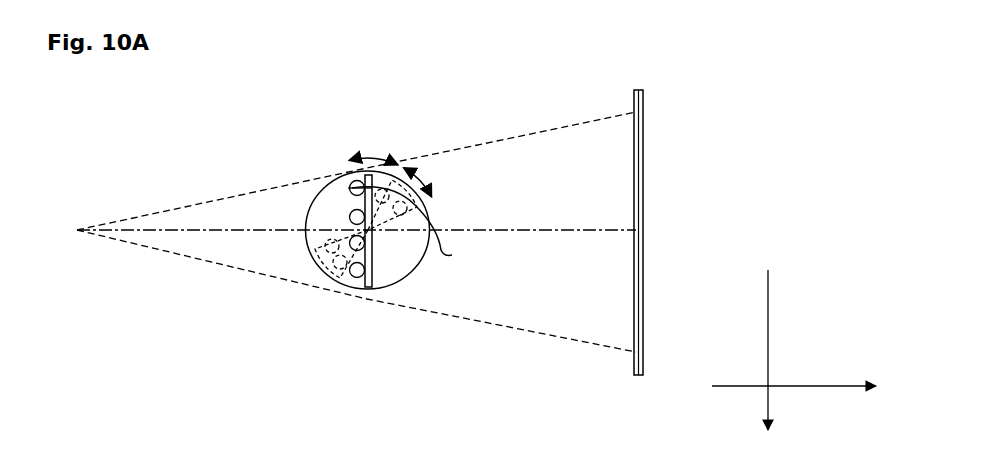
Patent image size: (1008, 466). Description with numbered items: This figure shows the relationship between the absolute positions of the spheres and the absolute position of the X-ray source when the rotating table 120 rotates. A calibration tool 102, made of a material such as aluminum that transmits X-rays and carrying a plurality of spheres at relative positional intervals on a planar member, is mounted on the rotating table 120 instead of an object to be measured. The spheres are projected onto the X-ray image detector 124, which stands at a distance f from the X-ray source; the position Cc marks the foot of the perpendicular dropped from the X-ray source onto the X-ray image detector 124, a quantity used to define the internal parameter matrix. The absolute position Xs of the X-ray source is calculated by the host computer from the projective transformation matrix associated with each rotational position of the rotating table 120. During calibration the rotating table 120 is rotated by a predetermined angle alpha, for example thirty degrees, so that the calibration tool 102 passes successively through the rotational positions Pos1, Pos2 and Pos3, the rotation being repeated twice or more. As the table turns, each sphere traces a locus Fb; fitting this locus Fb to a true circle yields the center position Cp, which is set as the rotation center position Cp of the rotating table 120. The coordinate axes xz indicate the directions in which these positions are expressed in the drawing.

The calibration tool 102 is at (382, 273).
The rotating table 120 is at (315, 218).
The X-ray image detector 124 is at (639, 112).
The absolute position of the X-ray source Xs is at (77, 230).
The position of the foot of the perpendicular Cc is at (640, 230).
The locus of the sphere Fb is at (348, 177).
The rotation center position Cp is at (402, 237).
The rotational position Pos1 is at (352, 158).
The rotational position Pos2 is at (402, 168).
The rotational position Pos3 is at (430, 205).
The predetermined angle alpha is at (394, 164).
The coordinate axes xz is at (794, 353).